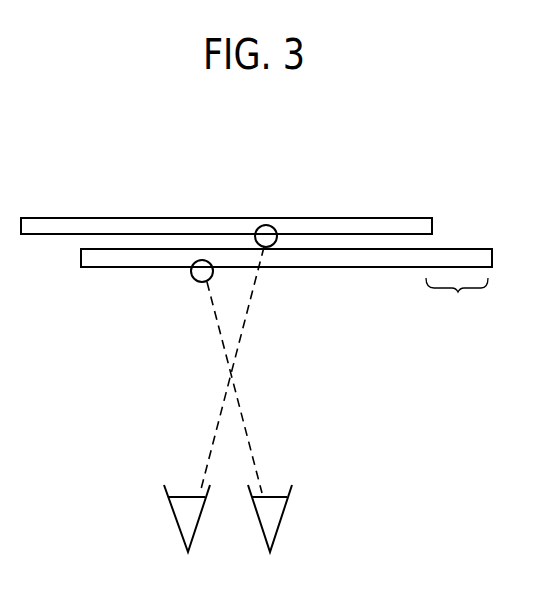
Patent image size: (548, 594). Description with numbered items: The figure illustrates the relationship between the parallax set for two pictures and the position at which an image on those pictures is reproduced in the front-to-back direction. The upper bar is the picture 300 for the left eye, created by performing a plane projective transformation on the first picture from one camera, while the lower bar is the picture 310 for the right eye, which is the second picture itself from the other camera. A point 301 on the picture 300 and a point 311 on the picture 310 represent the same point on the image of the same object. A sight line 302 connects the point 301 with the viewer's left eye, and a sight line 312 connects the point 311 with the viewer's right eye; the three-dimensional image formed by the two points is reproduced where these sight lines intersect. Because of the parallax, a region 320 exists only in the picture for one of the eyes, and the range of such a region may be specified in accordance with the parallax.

The picture 300 is at (426, 218).
The point 301 is at (274, 223).
The sight line 302 is at (246, 309).
The picture 310 is at (99, 268).
The point 311 is at (189, 279).
The sight line 312 is at (221, 342).
The region 320 is at (457, 302).